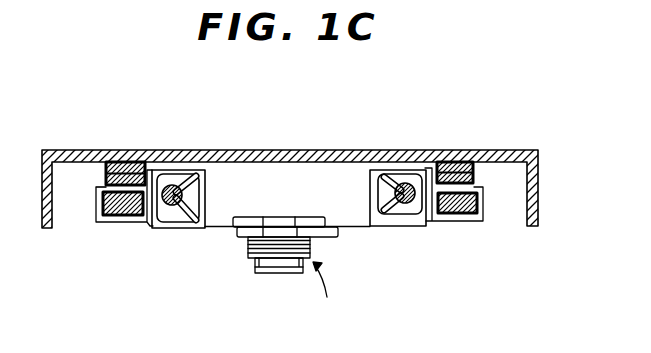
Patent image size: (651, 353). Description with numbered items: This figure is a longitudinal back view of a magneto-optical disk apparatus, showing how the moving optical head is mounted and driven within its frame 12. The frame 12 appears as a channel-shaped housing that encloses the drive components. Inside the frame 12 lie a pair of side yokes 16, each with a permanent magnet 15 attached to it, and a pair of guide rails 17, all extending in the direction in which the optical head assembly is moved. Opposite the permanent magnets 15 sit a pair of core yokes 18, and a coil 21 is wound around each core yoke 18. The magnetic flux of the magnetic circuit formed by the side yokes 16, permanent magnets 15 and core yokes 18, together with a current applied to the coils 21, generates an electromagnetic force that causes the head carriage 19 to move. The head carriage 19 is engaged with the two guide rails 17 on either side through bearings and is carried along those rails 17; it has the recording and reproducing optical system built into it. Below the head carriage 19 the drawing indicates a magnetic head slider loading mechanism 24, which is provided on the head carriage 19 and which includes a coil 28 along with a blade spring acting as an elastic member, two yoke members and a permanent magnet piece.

The frame 12 is at (539, 200).
The permanent magnet 15 is at (103, 185).
The side yoke 16 is at (130, 150).
The guide rail 17 is at (173, 185).
The core yoke 18 is at (108, 222).
The head carriage 19 is at (355, 217).
The coil 21 is at (123, 222).
The magnetic head slider loading mechanism 24 is at (325, 297).
The coil 28 is at (248, 247).